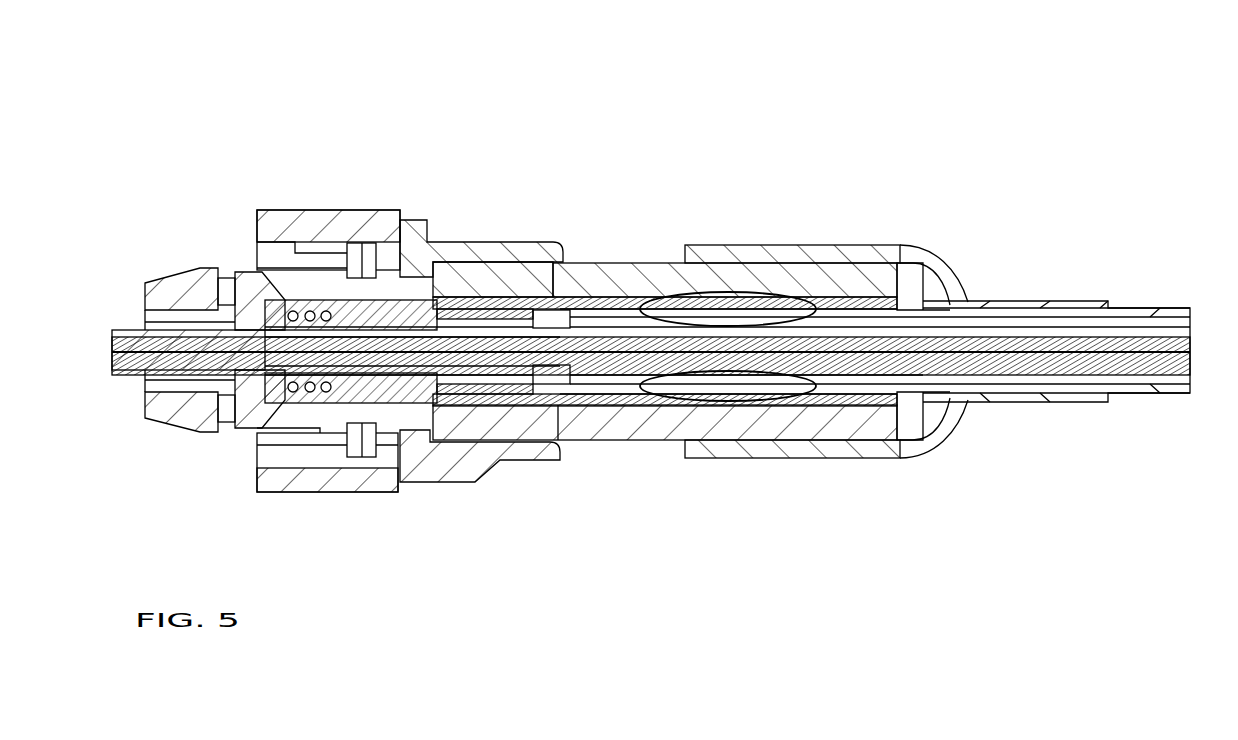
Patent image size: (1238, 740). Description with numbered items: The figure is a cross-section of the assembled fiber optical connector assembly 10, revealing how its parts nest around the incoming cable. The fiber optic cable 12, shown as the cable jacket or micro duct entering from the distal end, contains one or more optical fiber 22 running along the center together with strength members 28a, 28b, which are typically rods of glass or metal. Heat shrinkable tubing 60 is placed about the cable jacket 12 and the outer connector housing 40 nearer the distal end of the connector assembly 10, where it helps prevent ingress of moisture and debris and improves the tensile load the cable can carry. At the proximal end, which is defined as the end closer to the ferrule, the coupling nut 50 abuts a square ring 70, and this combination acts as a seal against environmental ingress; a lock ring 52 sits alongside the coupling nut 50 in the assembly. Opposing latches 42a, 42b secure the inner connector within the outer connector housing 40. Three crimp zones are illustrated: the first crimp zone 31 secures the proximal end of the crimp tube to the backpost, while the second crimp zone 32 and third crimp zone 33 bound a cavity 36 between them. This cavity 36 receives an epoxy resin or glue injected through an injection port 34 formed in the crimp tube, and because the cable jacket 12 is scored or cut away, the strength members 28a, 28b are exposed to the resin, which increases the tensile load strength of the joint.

The fiber optical connector assembly 10 is at (140, 91).
The fiber optic cable 12 is at (1129, 306).
The optical fiber 22 is at (1016, 354).
The strength member 28a is at (924, 383).
The strength member 28b is at (939, 318).
The first crimp zone 31 is at (478, 402).
The second crimp zone 32 is at (608, 403).
The third crimp zone 33 is at (840, 407).
The injection port 34 is at (653, 296).
The cavity 36 is at (736, 293).
The outer connector housing 40 is at (596, 276).
The latch 42a is at (247, 286).
The latch 42b is at (249, 422).
The coupling nut 50 is at (301, 231).
The lock ring 52 is at (427, 250).
The heat shrinkable tubing 60 is at (806, 250).
The square ring 70 is at (367, 253).